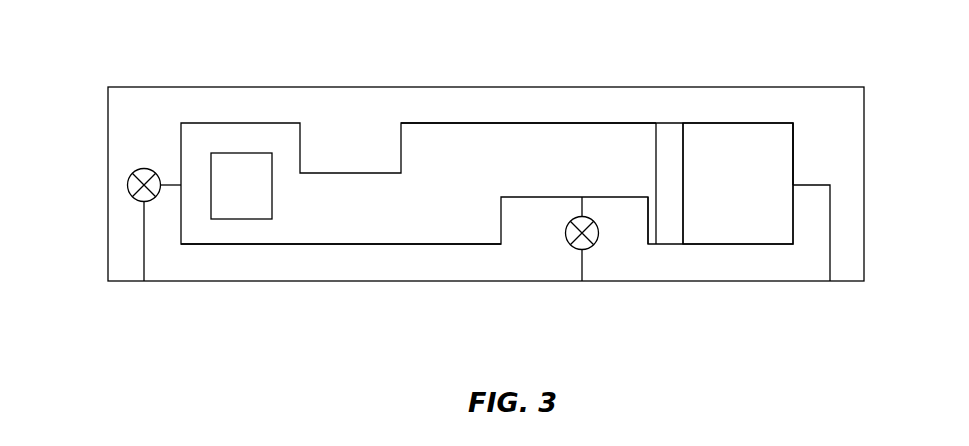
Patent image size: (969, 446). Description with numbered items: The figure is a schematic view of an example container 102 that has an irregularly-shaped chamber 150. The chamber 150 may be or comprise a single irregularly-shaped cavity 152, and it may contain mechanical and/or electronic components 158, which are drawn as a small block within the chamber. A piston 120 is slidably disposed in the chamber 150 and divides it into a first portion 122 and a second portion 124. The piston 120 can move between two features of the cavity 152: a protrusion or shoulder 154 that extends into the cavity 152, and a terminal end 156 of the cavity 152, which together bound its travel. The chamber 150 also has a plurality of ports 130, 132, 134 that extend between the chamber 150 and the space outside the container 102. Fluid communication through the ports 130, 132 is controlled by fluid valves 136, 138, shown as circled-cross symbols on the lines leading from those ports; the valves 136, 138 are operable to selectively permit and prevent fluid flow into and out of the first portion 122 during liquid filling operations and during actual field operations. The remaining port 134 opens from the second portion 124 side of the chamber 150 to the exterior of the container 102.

The container 102 is at (153, 59).
The piston 120 is at (668, 148).
The first portion 122 is at (337, 220).
The second portion 124 is at (733, 219).
The port 130 is at (144, 261).
The port 132 is at (582, 267).
The port 134 is at (830, 255).
The fluid valve 136 is at (128, 178).
The fluid valve 138 is at (566, 233).
The chamber 150 is at (437, 122).
The cavity 152 is at (529, 150).
The protrusion or shoulder 154 is at (641, 228).
The terminal end 156 is at (793, 147).
The mechanical and/or electronic components 158 is at (348, 152).